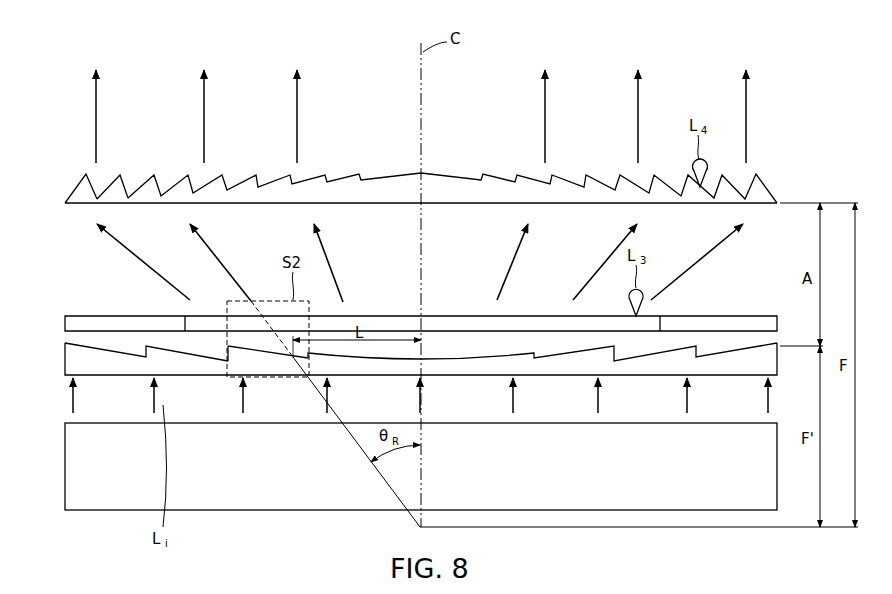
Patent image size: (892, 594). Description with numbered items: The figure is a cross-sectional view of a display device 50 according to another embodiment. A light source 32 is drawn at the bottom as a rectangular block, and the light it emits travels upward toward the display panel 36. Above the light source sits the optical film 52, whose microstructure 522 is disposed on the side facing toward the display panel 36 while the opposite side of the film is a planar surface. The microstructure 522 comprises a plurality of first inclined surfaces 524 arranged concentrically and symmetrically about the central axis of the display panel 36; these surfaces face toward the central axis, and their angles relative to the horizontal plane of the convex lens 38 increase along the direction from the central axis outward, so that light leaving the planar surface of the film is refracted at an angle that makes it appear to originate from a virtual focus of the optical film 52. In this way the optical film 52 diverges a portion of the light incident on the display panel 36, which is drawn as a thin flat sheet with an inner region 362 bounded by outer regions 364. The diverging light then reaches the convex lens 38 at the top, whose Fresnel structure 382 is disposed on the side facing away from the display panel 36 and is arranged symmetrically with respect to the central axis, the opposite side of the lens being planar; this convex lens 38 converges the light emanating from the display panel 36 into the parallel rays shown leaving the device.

The display device 50 is at (36, 82).
The convex lens 38 is at (75, 190).
The Fresnel structure 382 is at (124, 186).
The flat portion of optical sheet 364 is at (70, 320).
The central portion of optical sheet 362 is at (192, 321).
The display panel 36 is at (63, 333).
The optical film 52 is at (63, 367).
The microstructure 522 is at (237, 349).
The first inclined surface 524 is at (248, 352).
The light source 32 is at (113, 476).